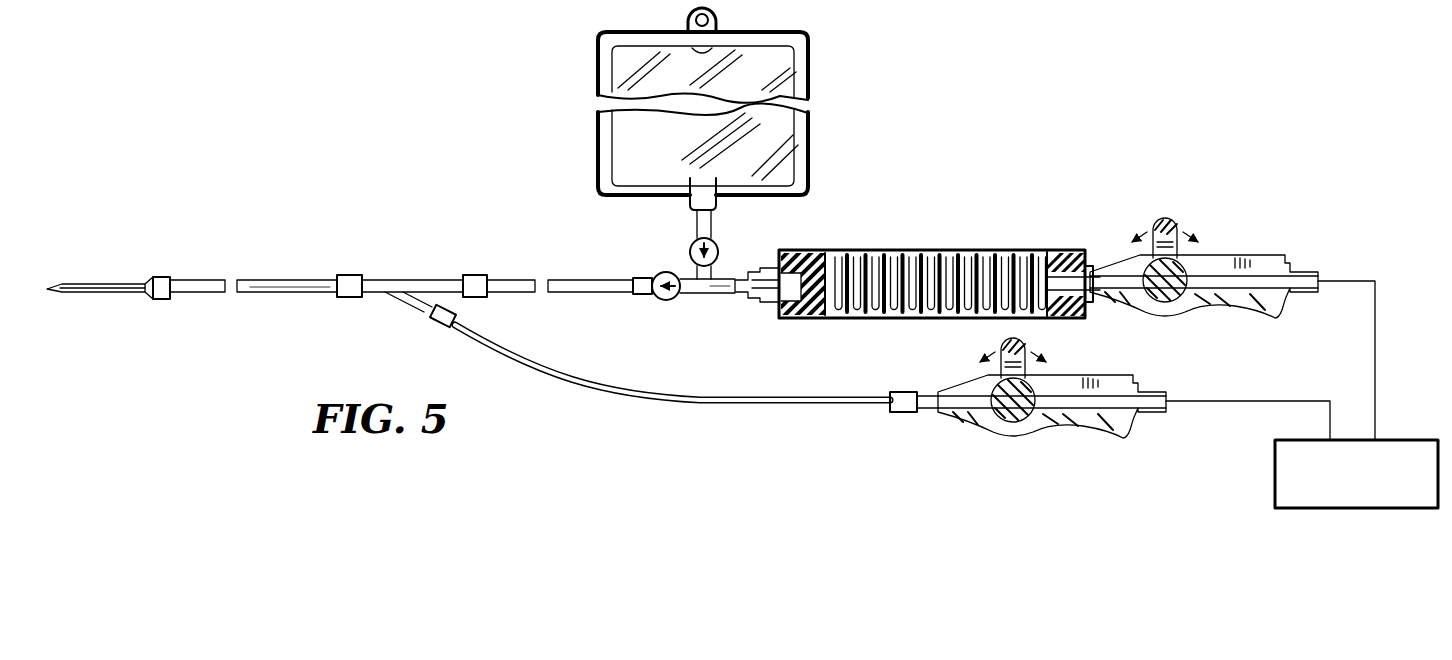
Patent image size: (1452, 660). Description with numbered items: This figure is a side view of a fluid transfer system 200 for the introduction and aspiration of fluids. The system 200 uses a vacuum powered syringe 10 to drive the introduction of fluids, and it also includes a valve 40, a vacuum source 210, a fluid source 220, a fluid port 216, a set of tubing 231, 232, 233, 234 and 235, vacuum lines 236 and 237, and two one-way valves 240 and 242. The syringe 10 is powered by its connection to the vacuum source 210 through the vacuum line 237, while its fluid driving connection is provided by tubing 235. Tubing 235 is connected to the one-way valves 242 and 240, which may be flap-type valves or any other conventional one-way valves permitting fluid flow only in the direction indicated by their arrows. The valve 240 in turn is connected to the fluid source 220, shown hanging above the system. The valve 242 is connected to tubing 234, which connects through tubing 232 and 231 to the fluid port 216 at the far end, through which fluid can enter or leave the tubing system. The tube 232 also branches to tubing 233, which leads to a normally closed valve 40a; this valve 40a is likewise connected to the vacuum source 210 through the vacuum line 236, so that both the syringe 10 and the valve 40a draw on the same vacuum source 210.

The fluid transfer system 200 is at (1027, 190).
The fluid port 216 is at (60, 283).
The tubing 231 is at (195, 283).
The tubing 232 is at (418, 300).
The tubing 233 is at (518, 360).
The tubing 234 is at (558, 280).
The tubing 235 is at (708, 300).
The one-way valve 240 is at (720, 243).
The one-way valve 242 is at (663, 302).
The fluid source 220 is at (832, 147).
The vacuum powered syringe 10 is at (937, 240).
The valve 40 is at (1222, 241).
The normally closed valve 40a is at (1097, 362).
The vacuum line 236 is at (1260, 398).
The vacuum line 237 is at (1375, 360).
The vacuum source 210 is at (1263, 461).